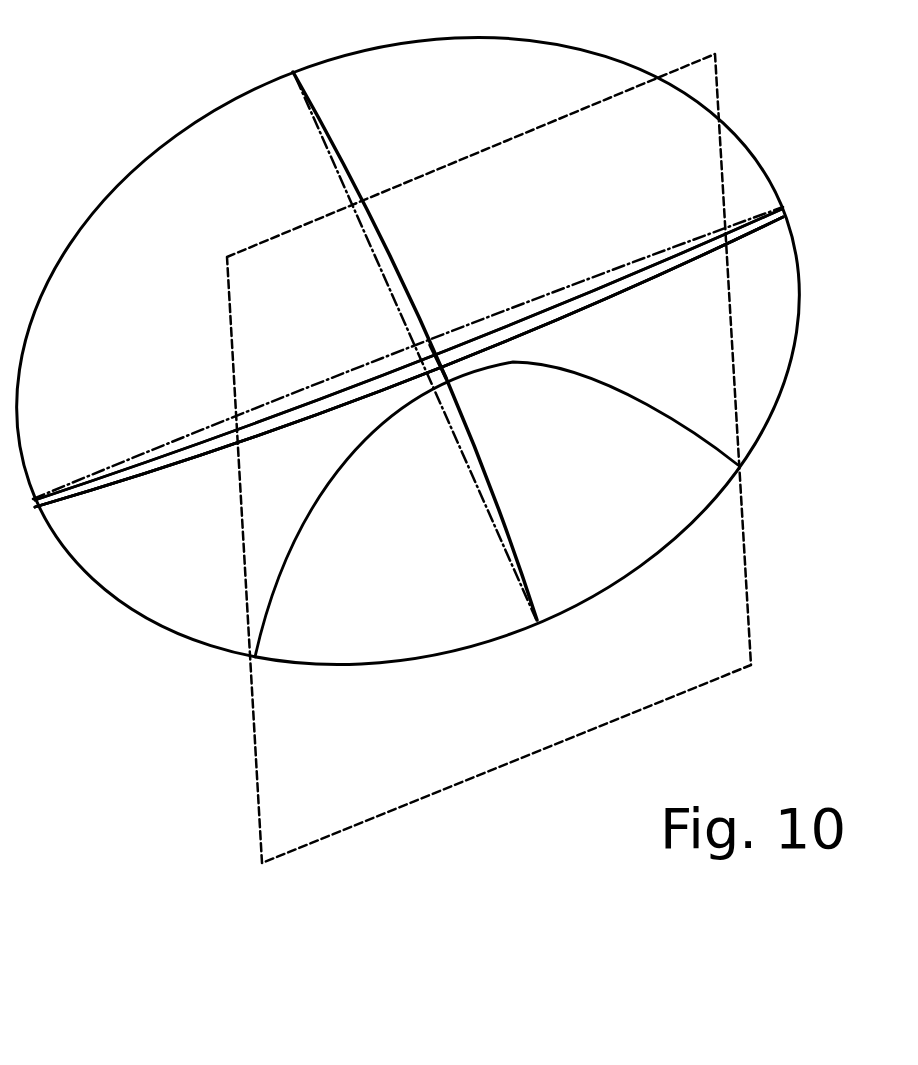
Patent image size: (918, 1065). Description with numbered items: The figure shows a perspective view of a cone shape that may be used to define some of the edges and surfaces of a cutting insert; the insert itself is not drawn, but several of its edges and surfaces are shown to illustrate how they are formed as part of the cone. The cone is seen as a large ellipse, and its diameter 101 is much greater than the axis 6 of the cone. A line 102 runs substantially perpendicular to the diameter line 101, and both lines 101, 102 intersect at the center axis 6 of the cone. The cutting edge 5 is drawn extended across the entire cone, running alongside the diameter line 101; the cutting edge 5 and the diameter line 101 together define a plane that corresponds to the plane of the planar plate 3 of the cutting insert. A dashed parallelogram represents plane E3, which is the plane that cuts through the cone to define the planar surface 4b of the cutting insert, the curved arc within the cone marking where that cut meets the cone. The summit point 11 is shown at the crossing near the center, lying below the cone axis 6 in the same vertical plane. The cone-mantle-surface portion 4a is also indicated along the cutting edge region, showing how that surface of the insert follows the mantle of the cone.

The planar plate 3 is at (357, 393).
The cone-mantle-surface portion 4a is at (367, 413).
The planar surface 4b is at (418, 428).
The cutting edge 5 is at (320, 413).
The axis 6 is at (420, 348).
The summit point 11 is at (445, 372).
The diameter 101 is at (458, 332).
The line 102 is at (393, 295).
The plane E3 is at (748, 590).